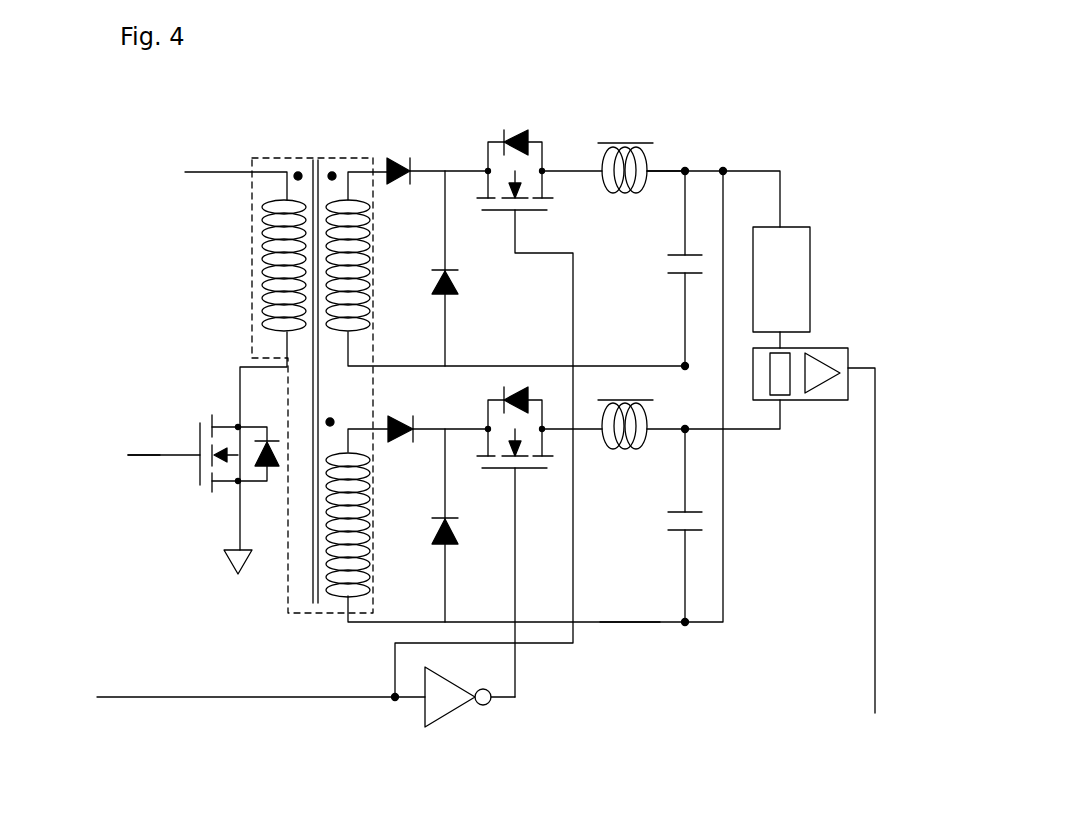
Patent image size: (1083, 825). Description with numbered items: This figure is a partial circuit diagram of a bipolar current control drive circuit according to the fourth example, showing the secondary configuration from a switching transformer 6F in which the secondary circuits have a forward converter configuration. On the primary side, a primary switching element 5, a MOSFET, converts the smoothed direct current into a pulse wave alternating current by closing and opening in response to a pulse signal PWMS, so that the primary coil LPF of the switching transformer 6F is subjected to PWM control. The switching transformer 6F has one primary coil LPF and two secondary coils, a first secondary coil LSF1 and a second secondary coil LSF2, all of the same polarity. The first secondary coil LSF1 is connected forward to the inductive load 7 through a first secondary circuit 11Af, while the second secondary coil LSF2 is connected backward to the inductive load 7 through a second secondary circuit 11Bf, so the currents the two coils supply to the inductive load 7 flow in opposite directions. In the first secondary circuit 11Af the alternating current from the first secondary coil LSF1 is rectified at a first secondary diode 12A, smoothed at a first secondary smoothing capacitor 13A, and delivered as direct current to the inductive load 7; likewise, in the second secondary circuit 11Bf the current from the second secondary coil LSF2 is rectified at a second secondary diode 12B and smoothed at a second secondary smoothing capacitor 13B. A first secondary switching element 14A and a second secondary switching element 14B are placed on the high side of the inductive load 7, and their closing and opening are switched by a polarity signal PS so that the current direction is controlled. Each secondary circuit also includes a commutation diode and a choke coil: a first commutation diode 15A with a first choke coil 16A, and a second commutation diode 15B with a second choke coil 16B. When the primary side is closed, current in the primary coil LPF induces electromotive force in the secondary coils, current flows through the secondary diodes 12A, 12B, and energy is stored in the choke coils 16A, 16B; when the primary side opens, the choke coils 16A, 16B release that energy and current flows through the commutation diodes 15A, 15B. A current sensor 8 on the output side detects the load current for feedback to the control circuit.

The switching transformer 6F is at (315, 347).
The primary coil LPF is at (263, 260).
The first secondary coil LSF1 is at (408, 247).
The second secondary coil LSF2 is at (371, 556).
The primary switching element 5 is at (212, 426).
The pulse signal PWMS is at (158, 458).
The first secondary diode 12A is at (398, 158).
The second secondary diode 12B is at (405, 445).
The first secondary switching element 14A is at (533, 143).
The second secondary switching element 14B is at (527, 470).
The first commutation diode 15A is at (449, 294).
The second commutation diode 15B is at (452, 547).
The first choke coil 16A is at (622, 193).
The second choke coil 16B is at (622, 449).
The first secondary smoothing capacitor 13A is at (697, 254).
The second secondary smoothing capacitor 13B is at (697, 509).
The first secondary circuit 11Af is at (676, 140).
The second secondary circuit 11Bf is at (632, 637).
The inductive load 7 is at (812, 255).
The current sensor 8 is at (826, 348).
The polarity signal PS is at (163, 697).